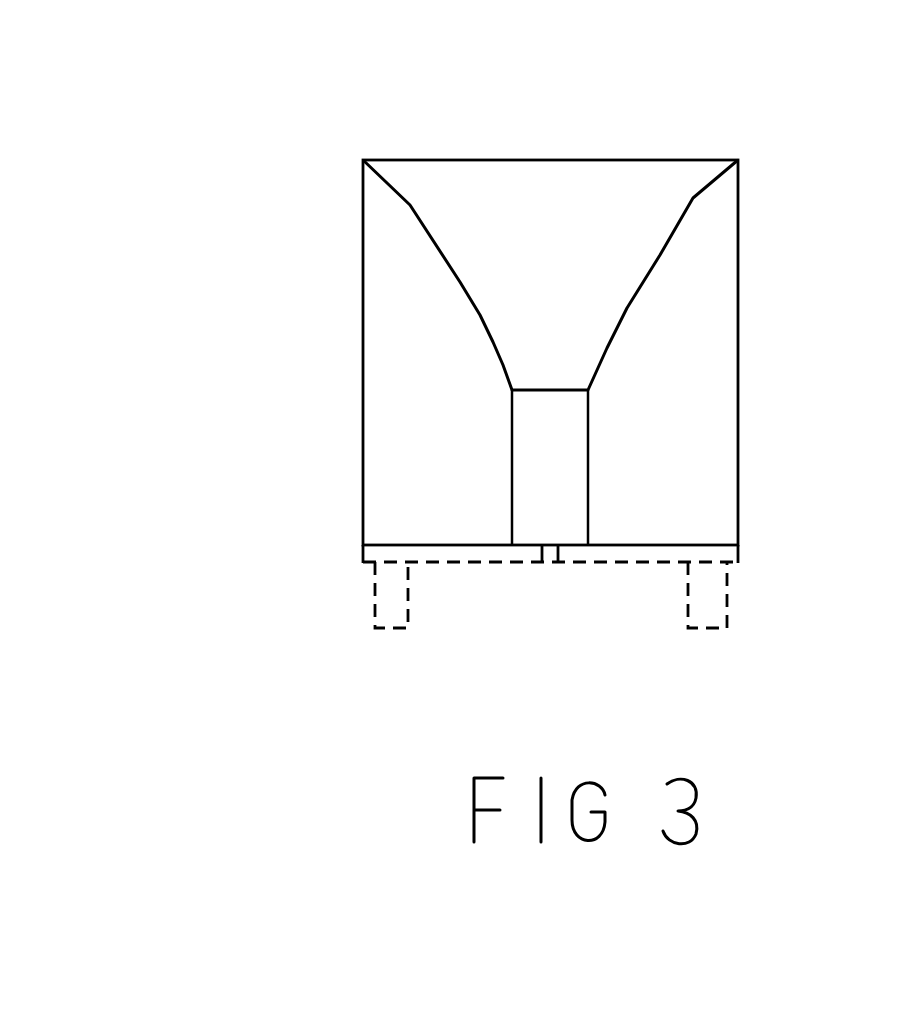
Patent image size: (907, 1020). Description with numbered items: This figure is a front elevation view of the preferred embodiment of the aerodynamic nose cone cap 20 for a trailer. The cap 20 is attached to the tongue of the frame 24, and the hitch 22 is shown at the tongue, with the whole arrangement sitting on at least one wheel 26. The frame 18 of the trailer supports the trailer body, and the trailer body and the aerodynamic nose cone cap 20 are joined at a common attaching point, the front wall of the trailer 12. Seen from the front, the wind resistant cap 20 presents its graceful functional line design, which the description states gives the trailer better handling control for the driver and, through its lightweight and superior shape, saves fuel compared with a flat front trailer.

The front wall of trailer 12 is at (419, 147).
The cap 20 is at (641, 197).
The frame 18 is at (360, 547).
The tongue of frame 24 is at (667, 555).
The wheel 26 is at (363, 597).
The hitch 22 is at (723, 611).